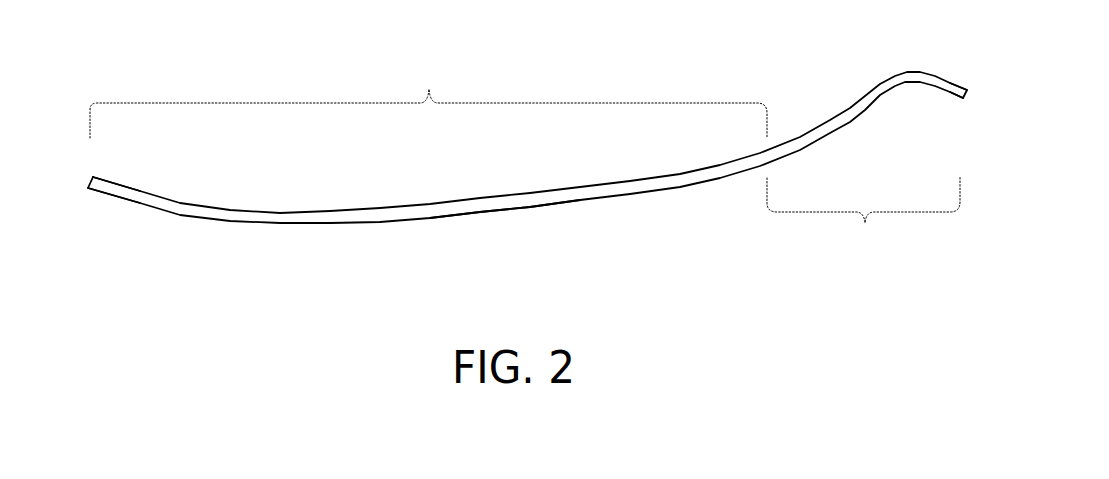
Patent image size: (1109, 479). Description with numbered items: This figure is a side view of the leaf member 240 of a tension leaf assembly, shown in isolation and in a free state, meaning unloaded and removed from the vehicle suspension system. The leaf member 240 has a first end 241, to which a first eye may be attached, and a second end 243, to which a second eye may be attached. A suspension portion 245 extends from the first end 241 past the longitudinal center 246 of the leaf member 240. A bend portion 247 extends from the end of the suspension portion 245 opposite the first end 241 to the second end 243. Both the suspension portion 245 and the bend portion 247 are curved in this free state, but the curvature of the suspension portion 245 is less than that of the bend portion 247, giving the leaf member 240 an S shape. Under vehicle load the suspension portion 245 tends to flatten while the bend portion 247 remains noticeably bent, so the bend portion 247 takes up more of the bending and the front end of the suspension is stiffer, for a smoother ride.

The leaf member 240 is at (337, 222).
The first end 241 is at (90, 189).
The second end 243 is at (963, 99).
The suspension portion 245 is at (428, 98).
The longitudinal center 246 is at (522, 209).
The bend portion 247 is at (863, 217).